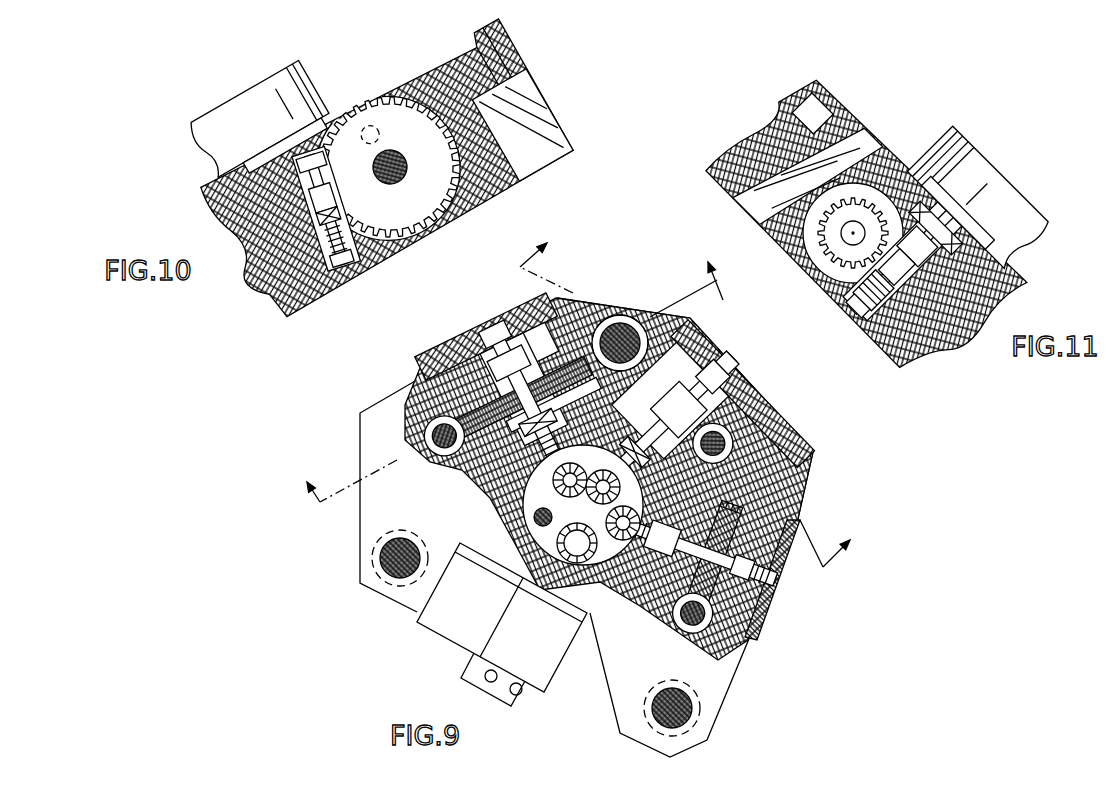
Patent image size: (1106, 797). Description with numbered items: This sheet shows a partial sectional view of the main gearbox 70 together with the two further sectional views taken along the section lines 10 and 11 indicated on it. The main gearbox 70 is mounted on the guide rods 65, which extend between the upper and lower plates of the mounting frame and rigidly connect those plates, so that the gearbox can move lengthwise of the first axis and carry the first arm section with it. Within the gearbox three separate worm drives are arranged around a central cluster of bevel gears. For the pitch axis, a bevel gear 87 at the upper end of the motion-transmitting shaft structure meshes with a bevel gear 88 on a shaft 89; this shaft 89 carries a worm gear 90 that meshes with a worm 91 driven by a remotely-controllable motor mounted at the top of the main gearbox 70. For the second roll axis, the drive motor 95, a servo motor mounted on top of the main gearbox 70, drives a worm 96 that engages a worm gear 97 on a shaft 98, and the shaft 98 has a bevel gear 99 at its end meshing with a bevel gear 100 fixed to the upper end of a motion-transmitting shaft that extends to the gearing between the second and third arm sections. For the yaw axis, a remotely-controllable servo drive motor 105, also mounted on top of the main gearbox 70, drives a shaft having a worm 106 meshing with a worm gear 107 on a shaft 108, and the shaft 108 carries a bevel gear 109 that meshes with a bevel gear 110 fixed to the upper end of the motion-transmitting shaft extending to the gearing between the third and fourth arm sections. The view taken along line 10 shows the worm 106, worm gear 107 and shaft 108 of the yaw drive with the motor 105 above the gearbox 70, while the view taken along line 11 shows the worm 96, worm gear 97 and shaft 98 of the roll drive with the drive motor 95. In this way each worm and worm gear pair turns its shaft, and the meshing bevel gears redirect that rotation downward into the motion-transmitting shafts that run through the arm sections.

In FIG. 9, the section line 10- 10 is at (527, 398).
In FIG. 9, the section line 11- 11 is at (675, 413).
In FIG. 9, the guide rods 65 is at (398, 580).
In FIG. 9, the main gearbox 70 is at (800, 455).
In FIG. 10, the main gearbox 70 is at (313, 303).
In FIG. 11, the main gearbox 70 is at (910, 360).
In FIG. 9, the bevel gear 87 is at (590, 610).
In FIG. 9, the bevel gear 88 is at (642, 508).
In FIG. 9, the shaft 89 is at (747, 607).
In FIG. 9, the worm gear 90 is at (737, 520).
In FIG. 9, the worm 91 is at (717, 627).
In FIG. 11, the drive motor 95 is at (1037, 230).
In FIG. 9, the worm 96 is at (733, 430).
In FIG. 11, the worm 96 is at (877, 333).
In FIG. 9, the worm gear 97 is at (727, 412).
In FIG. 11, the worm gear 97 is at (827, 260).
In FIG. 9, the shaft 98 is at (703, 423).
In FIG. 11, the shaft 98 is at (853, 227).
In FIG. 9, the bevel gear 99 is at (594, 445).
In FIG. 9, the bevel gear 100 is at (600, 496).
In FIG. 10, the drive motor 105 is at (203, 147).
In FIG. 9, the worm 106 is at (422, 440).
In FIG. 10, the worm 106 is at (293, 257).
In FIG. 9, the worm gear 107 is at (462, 345).
In FIG. 10, the worm gear 107 is at (423, 237).
In FIG. 9, the shaft 108 is at (507, 365).
In FIG. 10, the shaft 108 is at (403, 177).
In FIG. 9, the bevel gear 109 is at (530, 478).
In FIG. 9, the bevel gear 110 is at (535, 556).